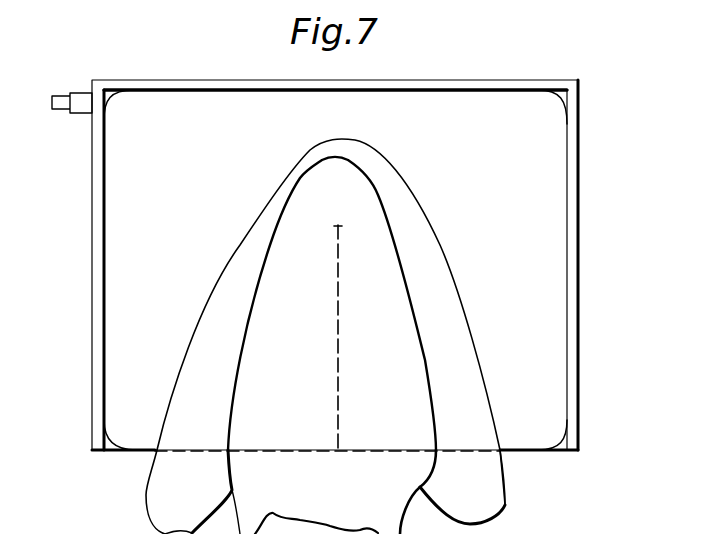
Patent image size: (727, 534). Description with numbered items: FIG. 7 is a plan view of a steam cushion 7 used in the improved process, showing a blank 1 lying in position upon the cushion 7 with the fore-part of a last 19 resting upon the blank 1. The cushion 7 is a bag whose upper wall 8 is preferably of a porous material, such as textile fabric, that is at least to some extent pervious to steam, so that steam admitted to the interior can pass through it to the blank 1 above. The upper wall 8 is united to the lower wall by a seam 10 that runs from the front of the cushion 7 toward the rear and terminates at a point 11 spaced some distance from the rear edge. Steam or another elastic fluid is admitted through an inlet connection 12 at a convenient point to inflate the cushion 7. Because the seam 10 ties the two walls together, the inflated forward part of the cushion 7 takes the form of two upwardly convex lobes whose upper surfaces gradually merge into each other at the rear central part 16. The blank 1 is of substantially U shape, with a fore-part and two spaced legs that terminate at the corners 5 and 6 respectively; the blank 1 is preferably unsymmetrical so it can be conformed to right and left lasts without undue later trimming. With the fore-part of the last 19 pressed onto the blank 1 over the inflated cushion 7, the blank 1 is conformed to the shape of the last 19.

The blank 1 is at (212, 289).
The corner 5 is at (165, 512).
The corner 6 is at (506, 505).
The cushion 7 is at (585, 260).
The upper wall 8 is at (335, 270).
The seam 10 is at (340, 337).
The point 11 is at (338, 226).
The inlet connection 12 is at (62, 108).
The rear central part 16 is at (365, 108).
The last 19 is at (252, 360).